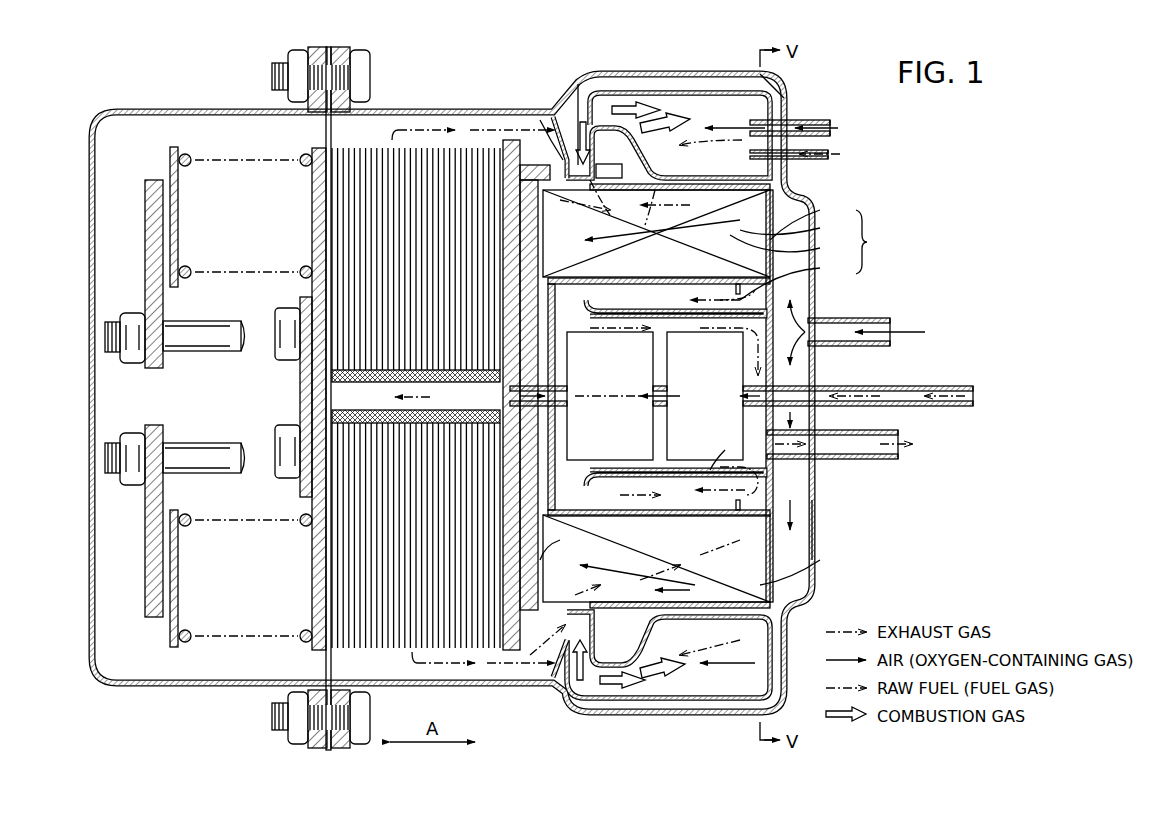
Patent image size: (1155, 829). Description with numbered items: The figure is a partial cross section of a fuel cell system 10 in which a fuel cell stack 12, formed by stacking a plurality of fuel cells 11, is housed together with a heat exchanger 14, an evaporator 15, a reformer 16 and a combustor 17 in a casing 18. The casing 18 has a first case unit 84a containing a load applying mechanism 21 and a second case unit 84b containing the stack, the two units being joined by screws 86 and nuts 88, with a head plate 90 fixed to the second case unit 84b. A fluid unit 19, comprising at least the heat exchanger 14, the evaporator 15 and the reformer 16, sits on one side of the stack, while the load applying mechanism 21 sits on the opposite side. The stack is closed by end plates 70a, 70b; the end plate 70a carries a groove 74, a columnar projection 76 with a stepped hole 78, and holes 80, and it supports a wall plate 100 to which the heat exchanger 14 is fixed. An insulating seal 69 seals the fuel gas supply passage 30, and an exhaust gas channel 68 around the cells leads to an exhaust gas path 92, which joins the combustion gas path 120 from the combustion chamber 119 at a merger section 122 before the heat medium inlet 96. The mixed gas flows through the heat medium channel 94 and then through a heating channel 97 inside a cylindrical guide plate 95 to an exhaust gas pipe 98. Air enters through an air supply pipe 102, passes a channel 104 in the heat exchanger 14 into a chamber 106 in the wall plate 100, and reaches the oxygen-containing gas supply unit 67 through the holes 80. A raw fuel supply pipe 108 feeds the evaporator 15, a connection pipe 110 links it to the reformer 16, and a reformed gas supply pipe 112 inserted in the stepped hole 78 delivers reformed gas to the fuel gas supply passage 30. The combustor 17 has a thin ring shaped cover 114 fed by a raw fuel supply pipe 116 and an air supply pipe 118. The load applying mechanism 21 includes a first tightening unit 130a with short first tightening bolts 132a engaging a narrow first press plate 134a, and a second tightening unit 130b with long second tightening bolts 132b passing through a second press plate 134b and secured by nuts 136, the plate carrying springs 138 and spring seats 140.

The fuel cell system 10 is at (975, 137).
The fuel cell 11 is at (386, 650).
The fuel cell stack 12 is at (416, 393).
The heat exchanger 14 is at (696, 242).
The evaporator 15 is at (790, 290).
The reformer 16 is at (812, 248).
The combustor 17 is at (758, 84).
The casing 18 is at (245, 698).
The fluid unit 19 is at (873, 242).
The load applying mechanism 21 is at (238, 386).
The fuel gas supply passage 30 is at (310, 398).
The oxygen-containing gas supply unit 67 is at (562, 355).
The exhaust gas channel 68 is at (460, 140).
The insulating seal 69 is at (350, 408).
The end plate 70a is at (505, 610).
The end plate 70b is at (326, 660).
The groove 74 is at (523, 620).
The columnar projection 76 is at (562, 432).
The stepped hole 78 is at (510, 396).
The hole 80 is at (552, 310).
The first case unit 84a is at (172, 112).
The second case unit 84b is at (380, 114).
The screw 86 is at (358, 64).
The nut 88 is at (280, 78).
The head plate 90 is at (815, 525).
The exhaust gas path 92 is at (530, 135).
The heat medium channel 94 is at (660, 185).
The guide plate 95 is at (721, 448).
The heat medium inlet 96 is at (576, 190).
The heating channel 97 is at (628, 458).
The exhaust gas pipe 98 is at (858, 459).
The wall plate 100 is at (562, 360).
The air supply pipe 102 is at (882, 318).
The channel 104 is at (790, 215).
The chamber 106 is at (564, 545).
The raw fuel supply pipe 108 is at (866, 384).
The connection pipe 110 is at (665, 376).
The reformed gas supply pipe 112 is at (562, 402).
The cover 114 is at (614, 702).
The raw fuel supply pipe 116 is at (818, 162).
The air supply pipe 118 is at (803, 119).
The combustion chamber 119 is at (648, 105).
The combustion gas path 120 is at (560, 118).
The merger section 122 is at (595, 168).
The first tightening unit 130a is at (213, 368).
The second tightening unit 130b is at (170, 470).
The first tightening bolt 132a is at (275, 335).
The second tightening bolt 132b is at (105, 334).
The first press plate 134a is at (300, 378).
The second press plate 134b is at (145, 262).
The nut 136 is at (132, 440).
The spring 138 is at (183, 643).
The spring seat 140 is at (312, 592).